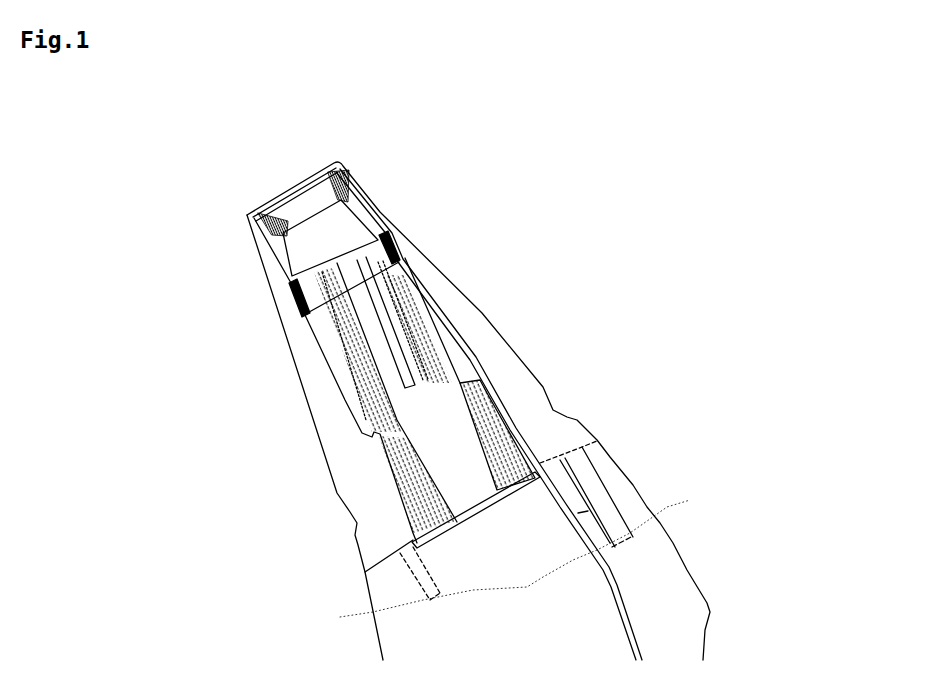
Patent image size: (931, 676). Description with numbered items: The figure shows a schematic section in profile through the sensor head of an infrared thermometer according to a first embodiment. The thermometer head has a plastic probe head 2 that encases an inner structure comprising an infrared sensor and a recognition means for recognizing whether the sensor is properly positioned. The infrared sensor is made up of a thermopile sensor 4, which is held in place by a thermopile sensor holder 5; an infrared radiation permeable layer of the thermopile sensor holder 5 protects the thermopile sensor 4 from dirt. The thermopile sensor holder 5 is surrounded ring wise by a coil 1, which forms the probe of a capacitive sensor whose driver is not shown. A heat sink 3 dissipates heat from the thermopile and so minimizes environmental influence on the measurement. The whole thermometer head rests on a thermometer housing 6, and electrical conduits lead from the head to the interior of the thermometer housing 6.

The coil 1 is at (393, 252).
The plastic probe head 2 is at (520, 400).
The heat sink 3 is at (418, 492).
The thermopile sensor 4 is at (317, 248).
The thermopile sensor holder 5 is at (255, 210).
The thermometer housing 6 is at (670, 582).